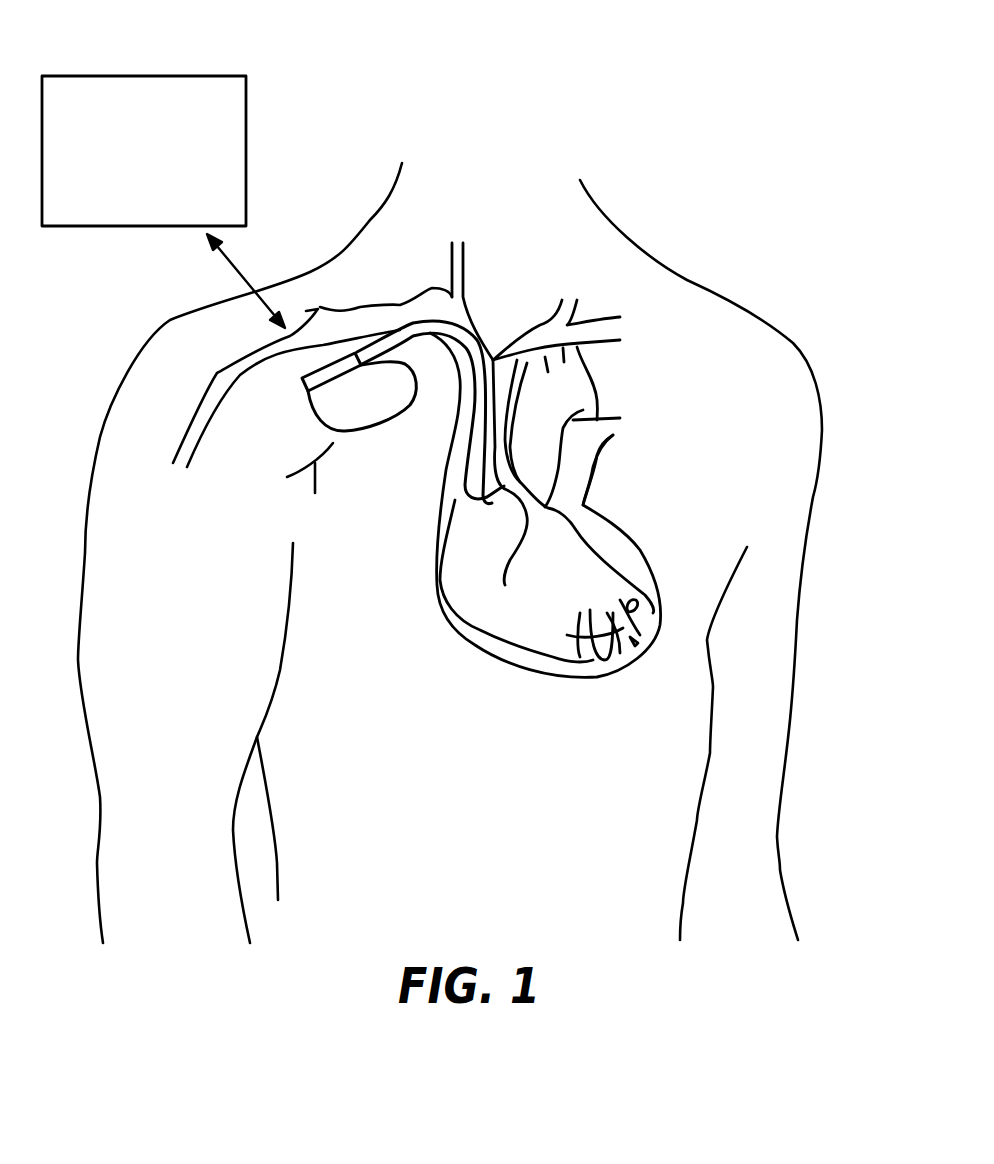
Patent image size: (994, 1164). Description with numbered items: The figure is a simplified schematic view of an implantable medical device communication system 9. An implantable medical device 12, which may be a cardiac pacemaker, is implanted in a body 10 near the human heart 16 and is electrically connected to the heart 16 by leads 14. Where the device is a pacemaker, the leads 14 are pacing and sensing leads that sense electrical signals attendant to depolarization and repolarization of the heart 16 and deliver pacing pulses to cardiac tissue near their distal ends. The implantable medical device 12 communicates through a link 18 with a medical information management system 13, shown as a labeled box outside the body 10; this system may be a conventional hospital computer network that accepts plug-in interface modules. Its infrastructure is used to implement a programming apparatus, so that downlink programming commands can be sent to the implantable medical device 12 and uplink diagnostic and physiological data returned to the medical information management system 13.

The implantable medical device communication system 9 is at (280, 110).
The body 10 is at (713, 225).
The implantable medical device 12 is at (317, 483).
The medical information management system 13 is at (170, 75).
The leads 14 is at (470, 420).
The heart 16 is at (567, 677).
The communication link 18 is at (258, 264).